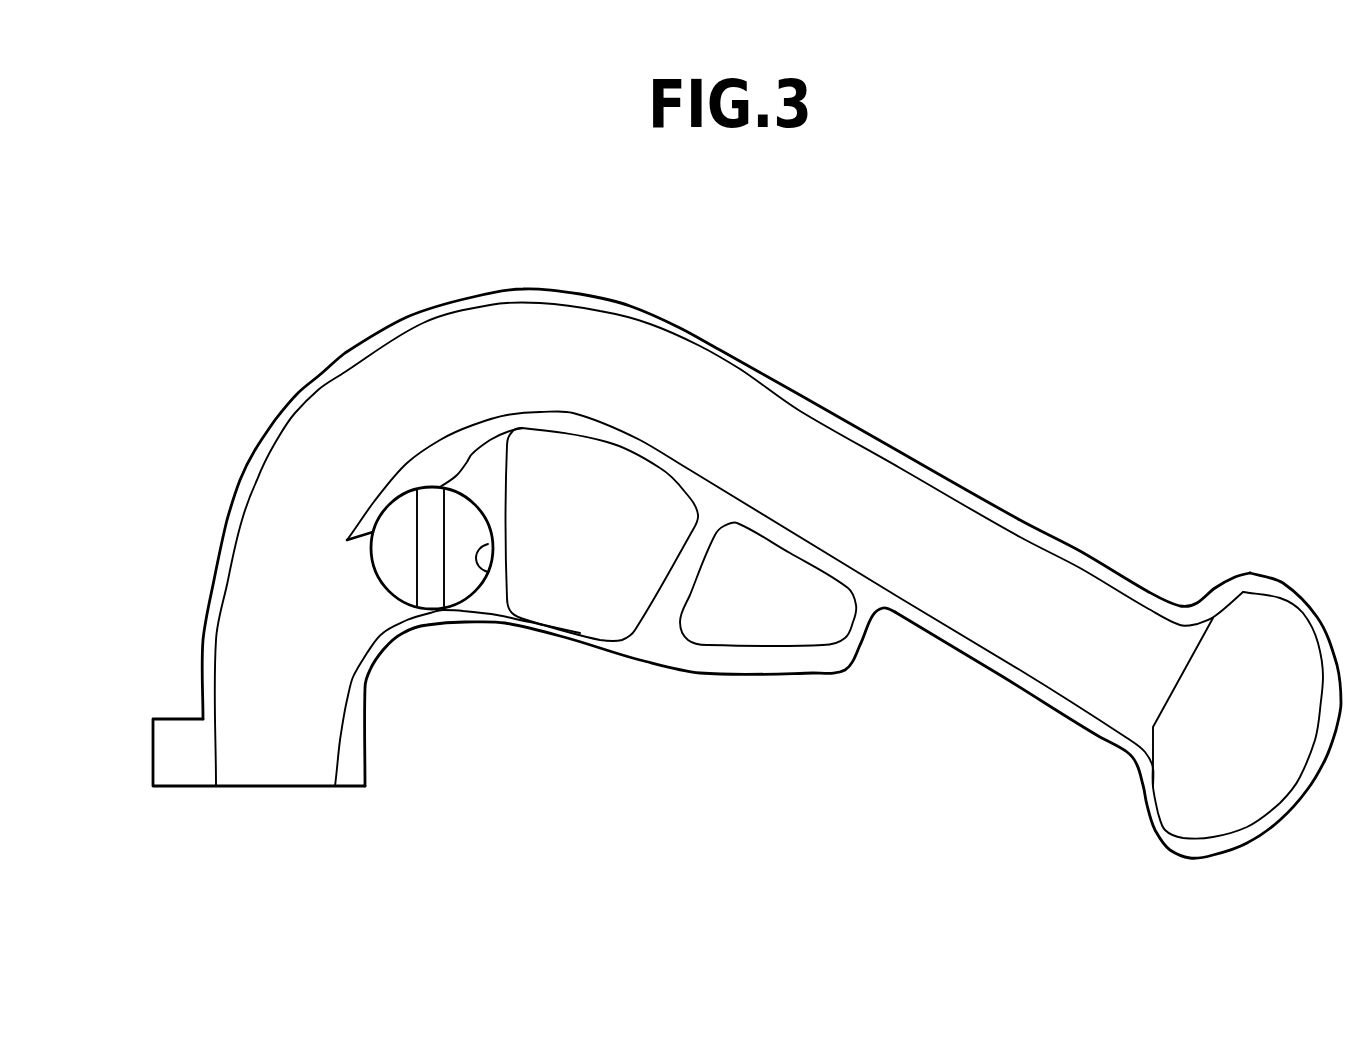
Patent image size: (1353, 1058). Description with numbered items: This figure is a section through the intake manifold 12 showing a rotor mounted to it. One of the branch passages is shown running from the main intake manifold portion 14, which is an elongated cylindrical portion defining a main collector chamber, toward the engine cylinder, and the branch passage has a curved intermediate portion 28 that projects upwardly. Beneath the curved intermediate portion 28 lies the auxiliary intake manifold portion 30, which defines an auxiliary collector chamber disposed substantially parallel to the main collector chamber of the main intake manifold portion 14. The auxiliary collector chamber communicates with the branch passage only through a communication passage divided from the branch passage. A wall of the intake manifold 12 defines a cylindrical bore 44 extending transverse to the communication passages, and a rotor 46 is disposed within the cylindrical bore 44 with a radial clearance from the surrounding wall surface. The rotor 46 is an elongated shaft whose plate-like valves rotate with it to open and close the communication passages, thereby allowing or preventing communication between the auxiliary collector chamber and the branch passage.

The intake manifold 12 is at (662, 296).
The main intake manifold portion 14 is at (1243, 617).
The curved intermediate portion 28 is at (528, 288).
The auxiliary intake manifold portion 30 is at (610, 558).
The cylindrical bore 44 is at (487, 573).
The rotor 46 is at (430, 587).